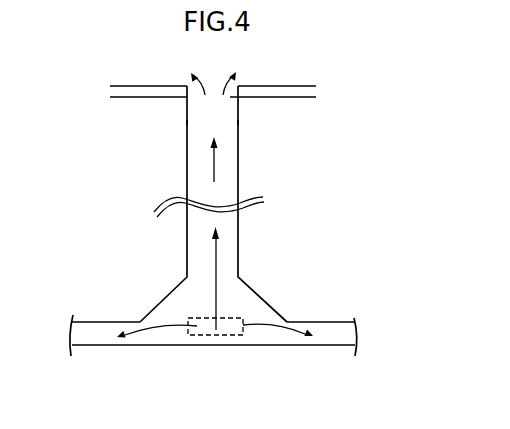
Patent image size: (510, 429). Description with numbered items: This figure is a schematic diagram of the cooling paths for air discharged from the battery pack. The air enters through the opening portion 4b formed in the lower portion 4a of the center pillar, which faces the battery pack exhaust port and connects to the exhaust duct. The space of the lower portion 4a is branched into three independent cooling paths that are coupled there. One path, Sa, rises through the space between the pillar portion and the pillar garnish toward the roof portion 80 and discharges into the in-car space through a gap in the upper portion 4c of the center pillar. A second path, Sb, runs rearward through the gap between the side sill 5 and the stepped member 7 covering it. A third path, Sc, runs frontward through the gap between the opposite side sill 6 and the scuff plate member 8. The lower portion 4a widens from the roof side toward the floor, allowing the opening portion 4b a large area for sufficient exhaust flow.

The roof portion 80 is at (243, 85).
The upper portion of the center pillar 4c is at (232, 96).
The lower portion of the center pillar 4a is at (258, 284).
The opening portion 4b is at (217, 345).
The side sill 5 is at (105, 350).
The side sill 6 is at (323, 375).
The stepped member 7 is at (88, 321).
The scuff plate member 8 is at (350, 320).